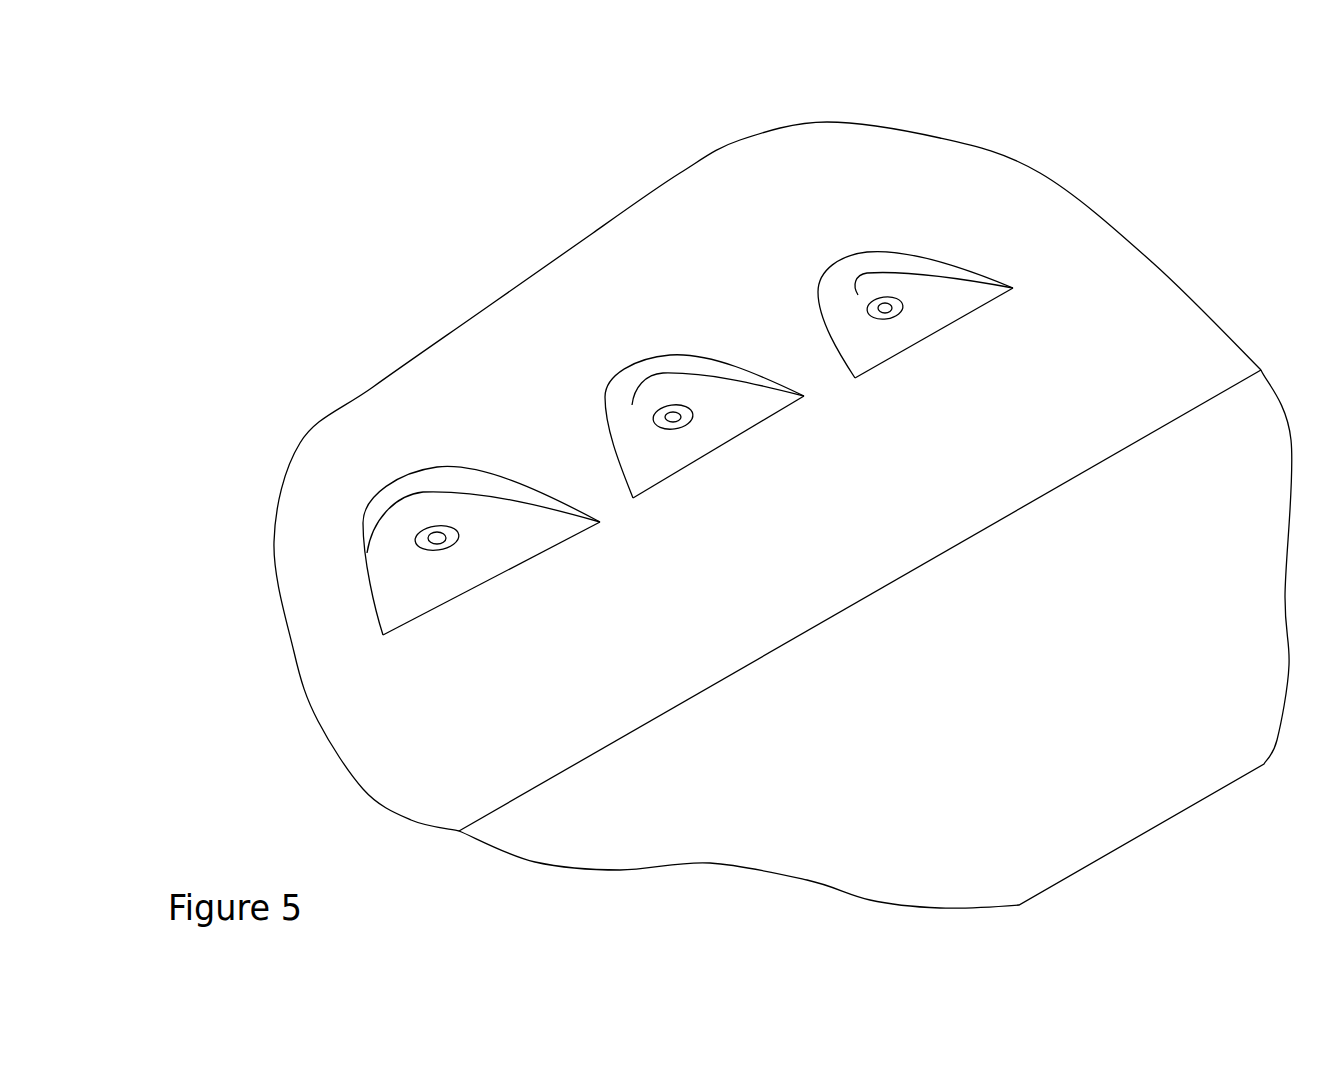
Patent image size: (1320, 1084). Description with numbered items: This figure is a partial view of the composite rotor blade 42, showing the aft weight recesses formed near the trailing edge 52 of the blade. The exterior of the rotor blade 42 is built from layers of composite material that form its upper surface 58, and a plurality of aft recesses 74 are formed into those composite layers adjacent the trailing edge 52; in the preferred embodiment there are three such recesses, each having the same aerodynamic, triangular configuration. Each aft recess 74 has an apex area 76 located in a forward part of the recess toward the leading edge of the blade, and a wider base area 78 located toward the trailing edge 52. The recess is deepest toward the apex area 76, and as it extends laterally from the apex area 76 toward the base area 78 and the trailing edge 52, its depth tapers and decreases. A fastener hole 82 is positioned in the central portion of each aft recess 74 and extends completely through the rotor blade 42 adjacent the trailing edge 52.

The rotor blade 42 is at (783, 510).
The trailing edge 52 is at (1201, 802).
The upper surface 58 is at (1138, 303).
The aft recess 74 is at (410, 512).
The apex area 76 is at (407, 470).
The base area 78 is at (611, 446).
The fastener hole 82 is at (417, 540).